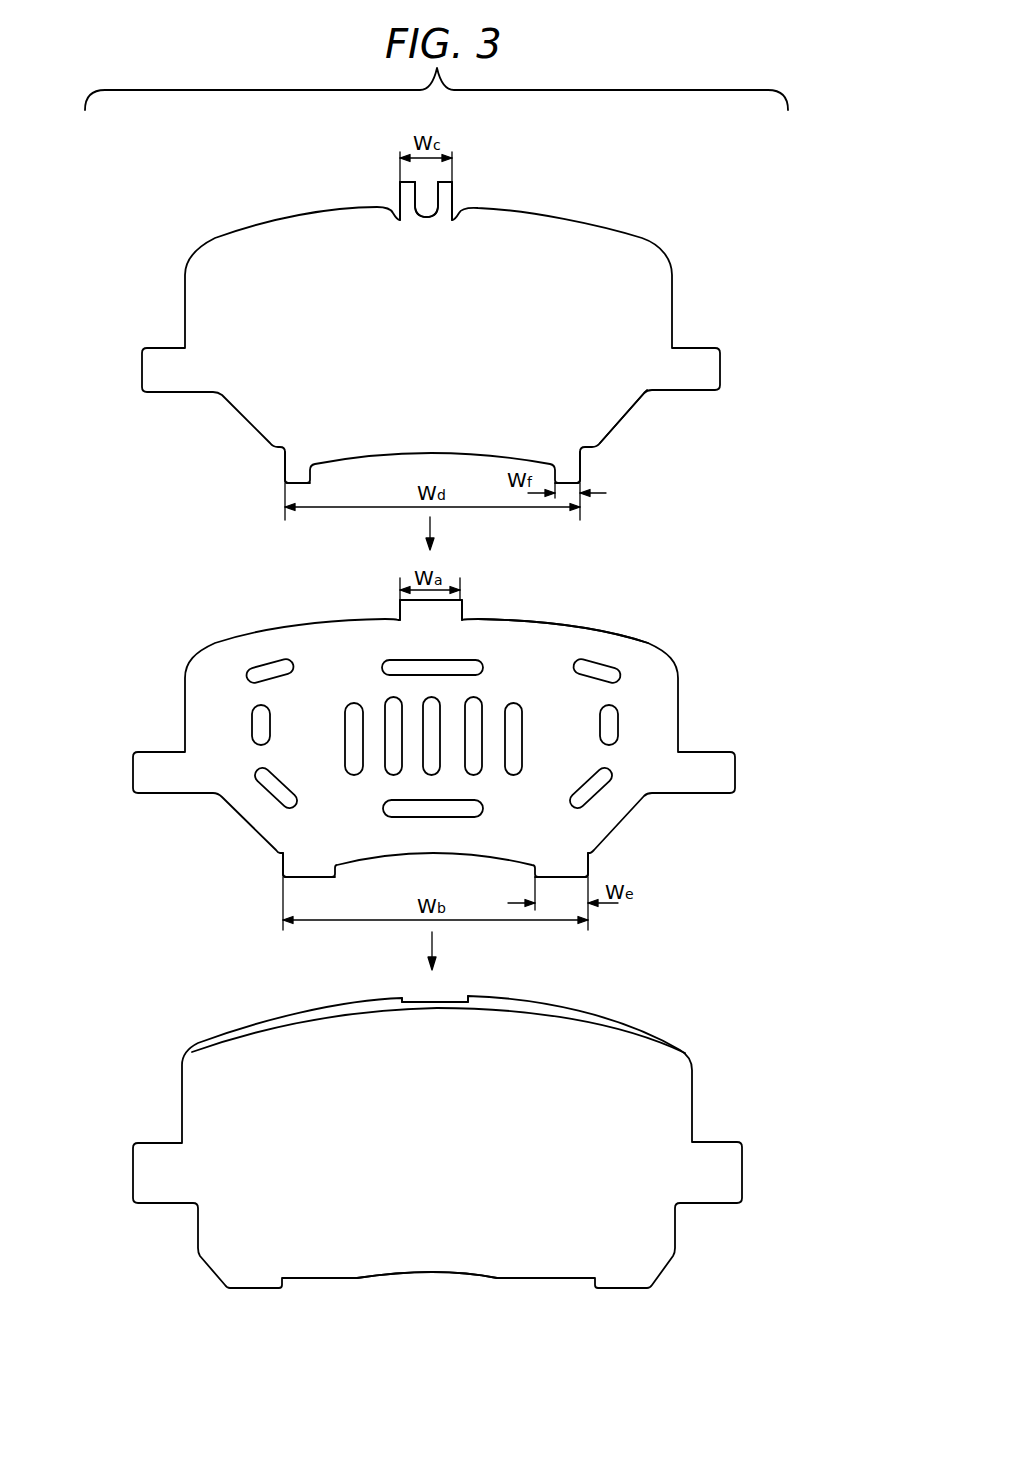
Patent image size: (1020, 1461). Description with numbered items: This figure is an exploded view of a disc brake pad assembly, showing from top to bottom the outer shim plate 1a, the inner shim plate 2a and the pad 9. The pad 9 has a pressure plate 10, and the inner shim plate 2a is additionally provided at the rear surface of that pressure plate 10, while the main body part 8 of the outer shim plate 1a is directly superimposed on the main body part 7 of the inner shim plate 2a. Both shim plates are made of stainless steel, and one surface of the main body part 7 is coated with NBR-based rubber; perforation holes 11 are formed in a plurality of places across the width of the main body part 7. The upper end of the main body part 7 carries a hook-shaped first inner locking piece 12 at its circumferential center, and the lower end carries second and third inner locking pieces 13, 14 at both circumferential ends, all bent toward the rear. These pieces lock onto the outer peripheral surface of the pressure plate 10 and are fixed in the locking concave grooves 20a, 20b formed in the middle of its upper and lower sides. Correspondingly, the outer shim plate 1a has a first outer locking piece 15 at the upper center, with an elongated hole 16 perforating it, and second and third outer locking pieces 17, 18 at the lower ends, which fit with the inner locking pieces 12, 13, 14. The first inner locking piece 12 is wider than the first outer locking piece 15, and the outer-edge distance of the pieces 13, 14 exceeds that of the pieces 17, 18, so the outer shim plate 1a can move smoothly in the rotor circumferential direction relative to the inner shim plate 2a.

The outer shim plate 1a is at (612, 192).
The inner shim plate 2a is at (684, 638).
The main body part 7 is at (553, 645).
The main body part 8 is at (593, 398).
The pad 9 is at (446, 1121).
The pressure plate 10 is at (614, 1100).
The perforation holes 11 is at (275, 785).
The first inner locking piece 12 is at (448, 612).
The second inner locking piece 13 is at (295, 876).
The third inner locking piece 14 is at (570, 865).
The first outer locking piece 15 is at (447, 192).
The elongated hole 16 is at (433, 202).
The second outer locking piece 17 is at (297, 478).
The third outer locking piece 18 is at (567, 475).
The locking concave groove 20a is at (432, 1000).
The locking concave groove 20b is at (500, 1278).